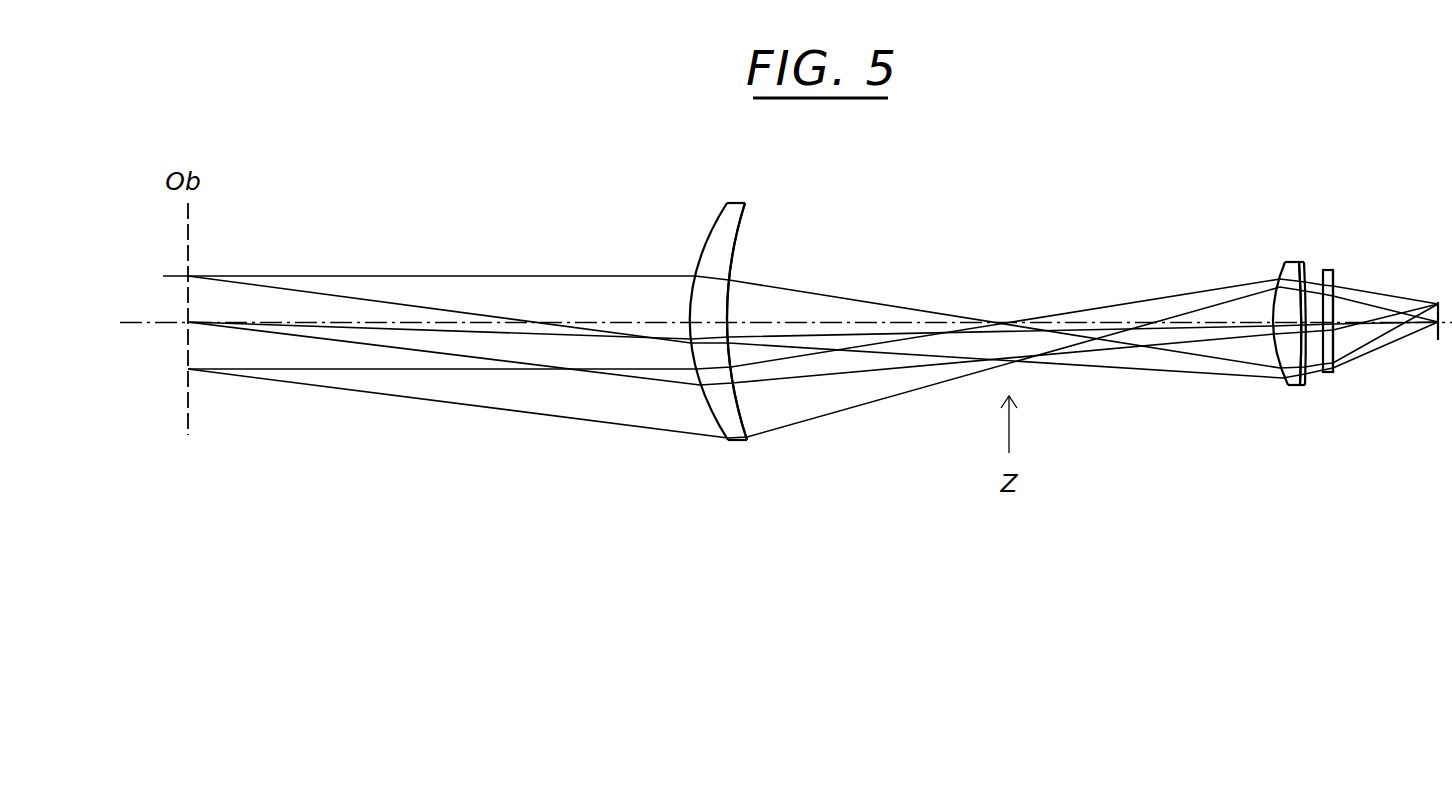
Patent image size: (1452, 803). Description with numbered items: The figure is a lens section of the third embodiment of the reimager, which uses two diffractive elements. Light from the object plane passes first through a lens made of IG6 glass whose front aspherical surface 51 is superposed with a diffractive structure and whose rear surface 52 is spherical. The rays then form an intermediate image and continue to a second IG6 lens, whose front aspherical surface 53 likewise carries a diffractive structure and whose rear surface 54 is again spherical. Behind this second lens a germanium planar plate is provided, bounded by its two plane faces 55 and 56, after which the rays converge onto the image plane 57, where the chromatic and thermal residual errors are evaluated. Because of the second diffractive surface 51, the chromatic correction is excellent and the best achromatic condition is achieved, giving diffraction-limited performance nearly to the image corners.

The aspherical surface 51 is at (732, 442).
The rear surface 52 is at (746, 409).
The aspherical surface 53 is at (1281, 264).
The rear surface 54 is at (1311, 266).
The germanium planar plate 55 is at (1321, 374).
The germanium planar plate 56 is at (1334, 373).
The image plane 57 is at (1438, 342).